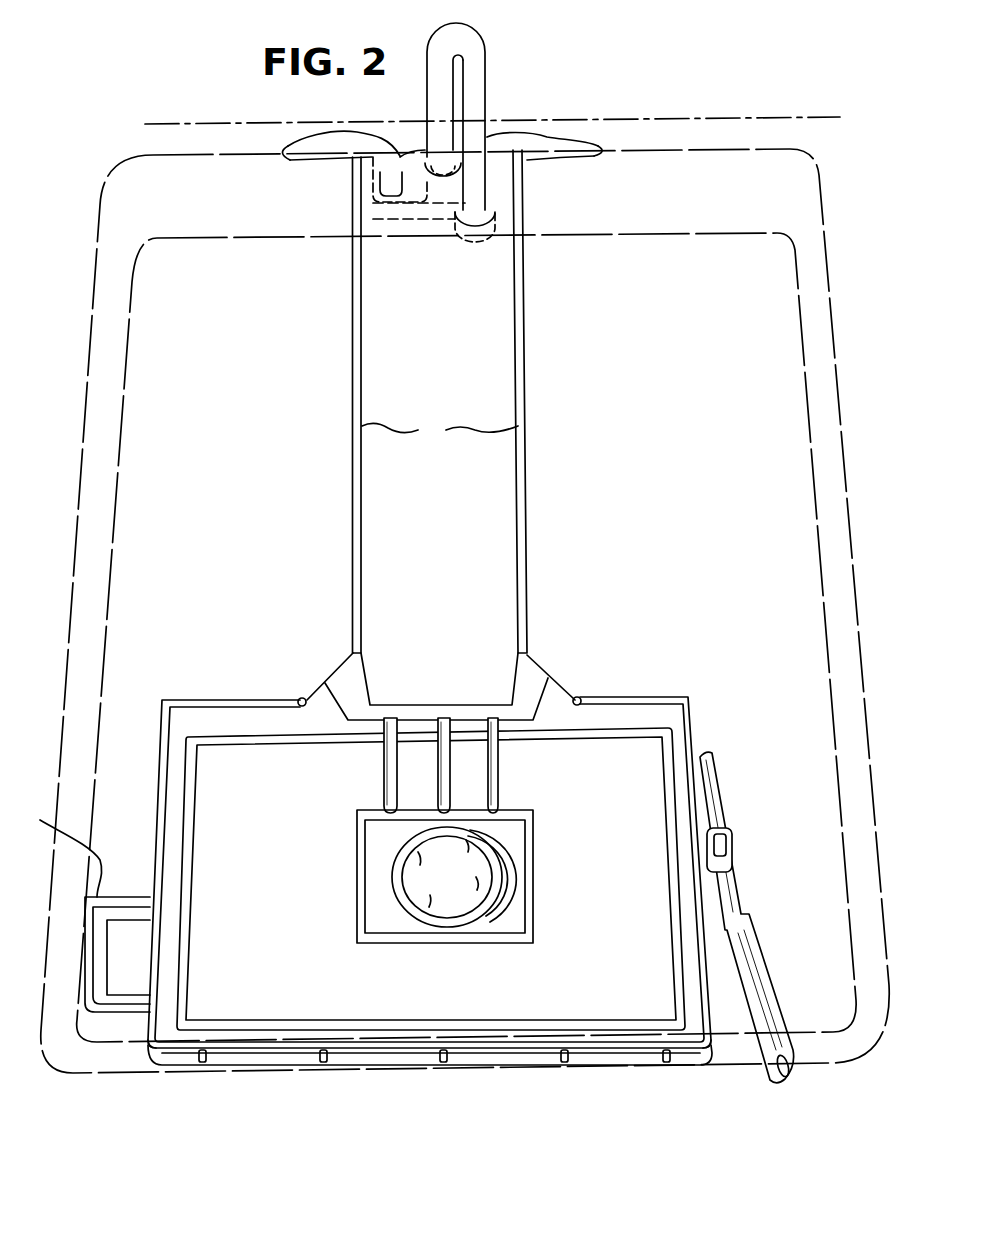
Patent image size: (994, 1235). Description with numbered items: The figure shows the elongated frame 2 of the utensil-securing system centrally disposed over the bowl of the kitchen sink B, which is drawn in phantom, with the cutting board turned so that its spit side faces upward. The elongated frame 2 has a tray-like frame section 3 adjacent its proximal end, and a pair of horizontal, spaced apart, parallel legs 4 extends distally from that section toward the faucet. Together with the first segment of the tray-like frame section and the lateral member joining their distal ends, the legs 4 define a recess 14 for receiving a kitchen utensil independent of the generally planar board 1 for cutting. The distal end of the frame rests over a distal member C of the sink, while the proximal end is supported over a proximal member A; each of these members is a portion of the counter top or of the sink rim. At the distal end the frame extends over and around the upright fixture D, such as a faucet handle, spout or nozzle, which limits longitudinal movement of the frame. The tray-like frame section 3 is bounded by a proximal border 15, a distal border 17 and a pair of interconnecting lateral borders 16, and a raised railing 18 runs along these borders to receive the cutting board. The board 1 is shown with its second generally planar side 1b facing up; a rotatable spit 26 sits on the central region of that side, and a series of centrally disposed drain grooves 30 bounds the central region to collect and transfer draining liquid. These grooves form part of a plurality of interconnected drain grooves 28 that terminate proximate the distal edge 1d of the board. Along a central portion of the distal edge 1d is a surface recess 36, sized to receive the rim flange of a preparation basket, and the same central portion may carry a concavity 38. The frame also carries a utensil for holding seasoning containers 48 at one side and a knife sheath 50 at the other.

The generally planar board for cutting 1 is at (672, 705).
The second generally planar side 1b is at (431, 879).
The distal edge 1d is at (379, 701).
The elongated frame 2 is at (531, 409).
The tray-like frame section 3 is at (154, 752).
The parallel legs 4 is at (440, 436).
The recess 14 is at (484, 340).
The proximal border 15 is at (598, 1069).
The lateral borders 16 is at (128, 1026).
The distal border 17 is at (618, 692).
The raised railing 18 is at (198, 700).
The rotatable spit 26 is at (490, 922).
The interconnected drain grooves 28 is at (397, 770).
The centrally disposed drain grooves 30 is at (357, 858).
The surface recess 36 is at (536, 680).
The concavity 38 is at (453, 685).
The utensil for holding seasoning containers 48 is at (62, 1025).
The knife sheath 50 is at (720, 768).
The proximal member A is at (672, 1070).
The kitchen sink B is at (843, 400).
The distal member C is at (642, 160).
The upright fixture D is at (424, 230).